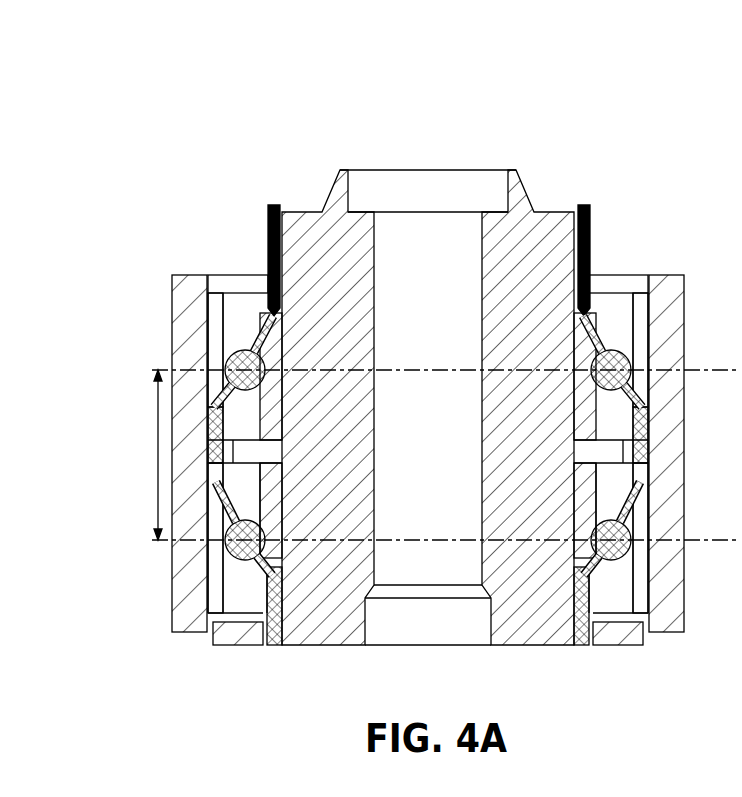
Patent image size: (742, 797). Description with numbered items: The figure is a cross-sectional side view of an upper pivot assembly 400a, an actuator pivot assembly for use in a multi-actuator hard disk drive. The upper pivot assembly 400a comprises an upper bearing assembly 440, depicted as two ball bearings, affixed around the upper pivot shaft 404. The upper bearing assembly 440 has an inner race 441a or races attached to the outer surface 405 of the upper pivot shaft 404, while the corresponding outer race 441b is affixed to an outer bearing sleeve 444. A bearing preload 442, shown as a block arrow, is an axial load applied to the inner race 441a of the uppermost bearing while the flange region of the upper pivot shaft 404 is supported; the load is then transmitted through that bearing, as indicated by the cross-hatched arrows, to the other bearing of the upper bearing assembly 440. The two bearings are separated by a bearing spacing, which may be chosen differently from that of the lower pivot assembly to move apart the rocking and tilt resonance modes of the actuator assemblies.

The upper pivot assembly 400a is at (215, 98).
The upper pivot shaft 404 is at (515, 222).
The outer surface 405 is at (305, 500).
The upper bearing assembly 440 is at (244, 605).
The inner race 441a is at (272, 483).
The outer race 441b is at (230, 278).
The bearing preload 442 is at (283, 204).
The outer bearing sleeve 444 is at (180, 583).